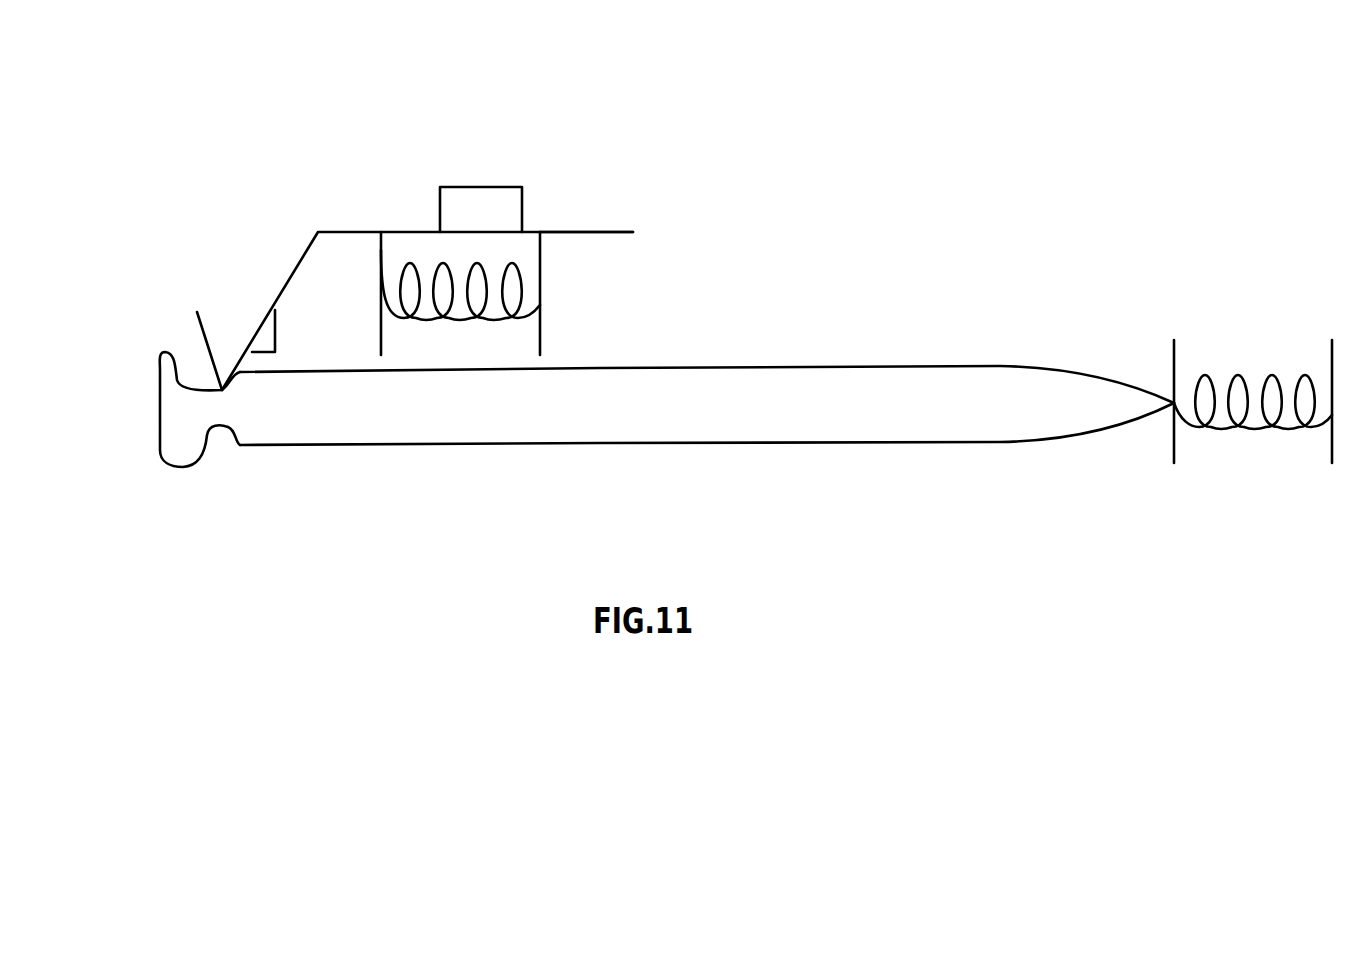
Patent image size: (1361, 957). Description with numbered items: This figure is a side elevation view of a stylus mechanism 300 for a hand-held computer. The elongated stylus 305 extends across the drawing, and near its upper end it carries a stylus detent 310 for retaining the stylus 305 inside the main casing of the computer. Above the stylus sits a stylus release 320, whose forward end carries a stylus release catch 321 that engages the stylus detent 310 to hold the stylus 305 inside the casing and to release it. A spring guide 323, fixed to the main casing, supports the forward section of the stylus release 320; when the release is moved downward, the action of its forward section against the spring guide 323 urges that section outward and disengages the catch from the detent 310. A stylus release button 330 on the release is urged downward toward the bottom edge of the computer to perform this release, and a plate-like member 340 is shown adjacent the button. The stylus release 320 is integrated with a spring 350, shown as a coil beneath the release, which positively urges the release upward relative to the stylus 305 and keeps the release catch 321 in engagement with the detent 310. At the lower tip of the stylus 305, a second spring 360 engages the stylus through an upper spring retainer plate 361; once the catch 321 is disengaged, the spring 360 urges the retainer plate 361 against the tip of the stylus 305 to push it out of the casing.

The stylus mechanism 300 is at (963, 142).
The stylus 305 is at (898, 392).
The stylus detent 310 is at (217, 427).
The stylus release 320 is at (300, 251).
The stylus release catch 321 is at (193, 352).
The spring guide 323 is at (268, 316).
The stylus release button 330 is at (482, 186).
The mounting plate 340 is at (607, 232).
The spring 350 is at (403, 264).
The spring 360 is at (1237, 377).
The upper spring retainer plate 361 is at (1170, 365).